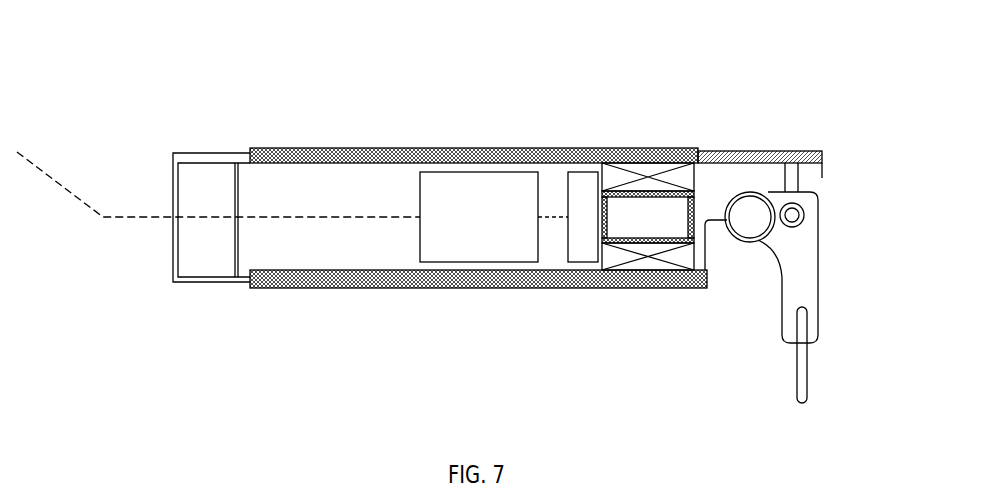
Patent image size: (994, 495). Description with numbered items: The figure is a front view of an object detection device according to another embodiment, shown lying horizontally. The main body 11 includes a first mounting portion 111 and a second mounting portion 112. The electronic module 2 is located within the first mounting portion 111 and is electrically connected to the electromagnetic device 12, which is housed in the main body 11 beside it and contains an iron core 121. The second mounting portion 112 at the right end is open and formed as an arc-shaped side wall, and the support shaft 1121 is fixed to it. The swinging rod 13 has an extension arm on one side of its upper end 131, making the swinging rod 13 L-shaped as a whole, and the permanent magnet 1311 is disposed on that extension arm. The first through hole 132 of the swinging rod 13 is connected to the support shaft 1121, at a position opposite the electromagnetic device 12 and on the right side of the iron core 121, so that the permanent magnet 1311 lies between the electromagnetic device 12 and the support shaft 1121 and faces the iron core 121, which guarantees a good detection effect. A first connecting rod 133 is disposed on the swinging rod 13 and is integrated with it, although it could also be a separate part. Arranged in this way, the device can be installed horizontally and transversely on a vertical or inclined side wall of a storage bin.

The main body 11 is at (295, 152).
The first mounting portion 111 is at (390, 193).
The electronic module 2 is at (488, 195).
The electromagnetic device 12 is at (590, 163).
The iron core 121 is at (628, 205).
The second mounting portion 112 is at (773, 186).
The support shaft 1121 is at (801, 206).
The swinging rod 13 is at (820, 228).
The upper end 131 is at (768, 192).
The permanent magnet 1311 is at (742, 193).
The first through hole 132 is at (805, 228).
The first connecting rod 133 is at (793, 280).